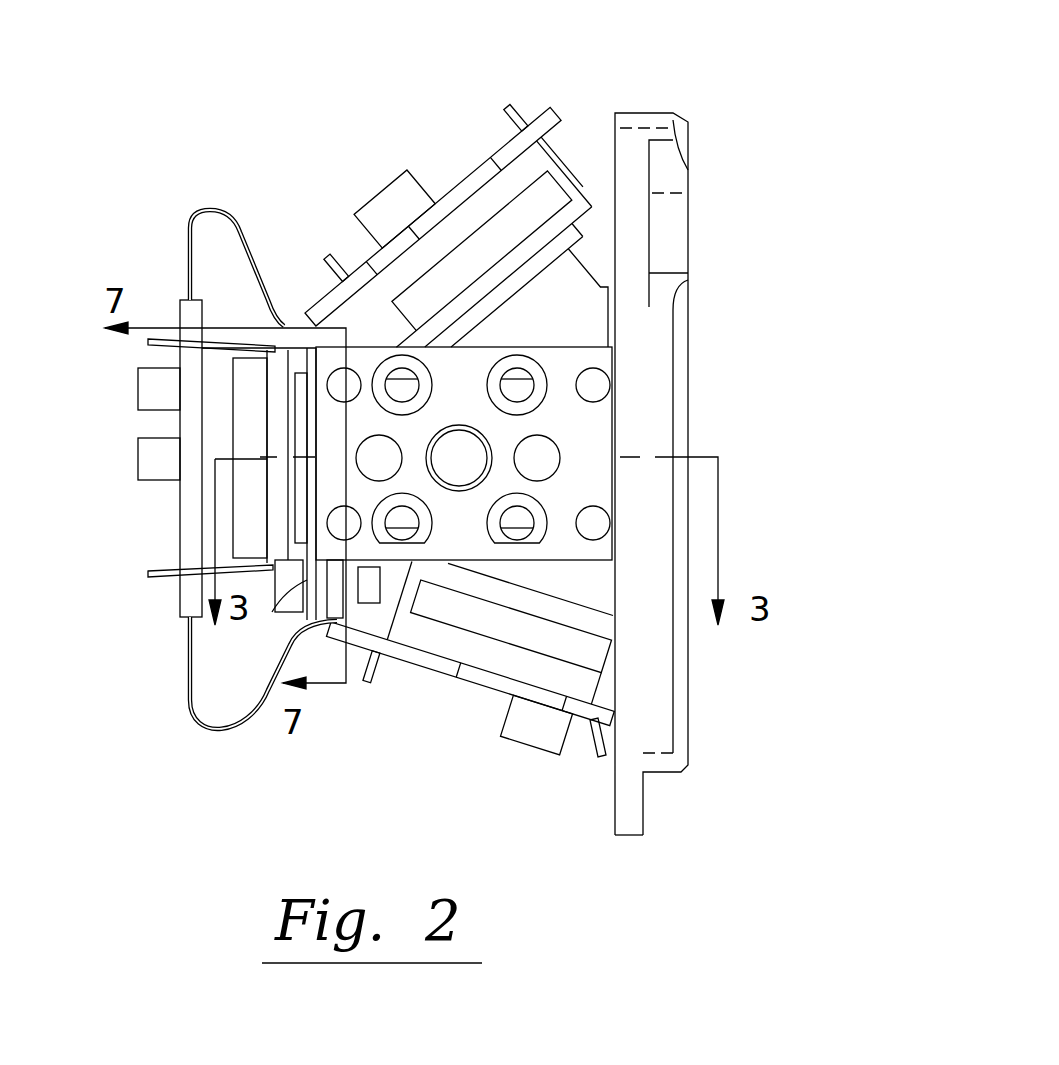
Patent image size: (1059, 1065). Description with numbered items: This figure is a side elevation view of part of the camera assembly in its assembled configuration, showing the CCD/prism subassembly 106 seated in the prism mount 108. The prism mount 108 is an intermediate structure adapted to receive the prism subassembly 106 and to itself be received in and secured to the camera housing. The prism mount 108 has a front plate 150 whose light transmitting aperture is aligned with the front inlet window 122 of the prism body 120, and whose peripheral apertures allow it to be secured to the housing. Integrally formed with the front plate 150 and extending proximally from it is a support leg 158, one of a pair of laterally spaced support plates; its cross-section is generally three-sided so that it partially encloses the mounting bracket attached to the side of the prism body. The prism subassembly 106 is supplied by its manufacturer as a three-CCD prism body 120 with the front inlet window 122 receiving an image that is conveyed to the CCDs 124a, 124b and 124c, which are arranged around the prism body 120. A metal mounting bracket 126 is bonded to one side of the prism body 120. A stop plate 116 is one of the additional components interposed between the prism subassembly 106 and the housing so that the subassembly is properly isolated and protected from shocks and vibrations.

The CCD/prism subassembly 106 is at (551, 106).
The CCD 124a is at (498, 227).
The metal mounting bracket 126 is at (400, 385).
The prism body 120 is at (585, 285).
The front inlet window 122 is at (690, 432).
The CCD 124b is at (237, 505).
The stop plate 116 is at (190, 667).
The support leg 158 is at (448, 537).
The CCD 124c is at (495, 628).
The prism mount 108 is at (643, 800).
The front plate 150 is at (628, 836).